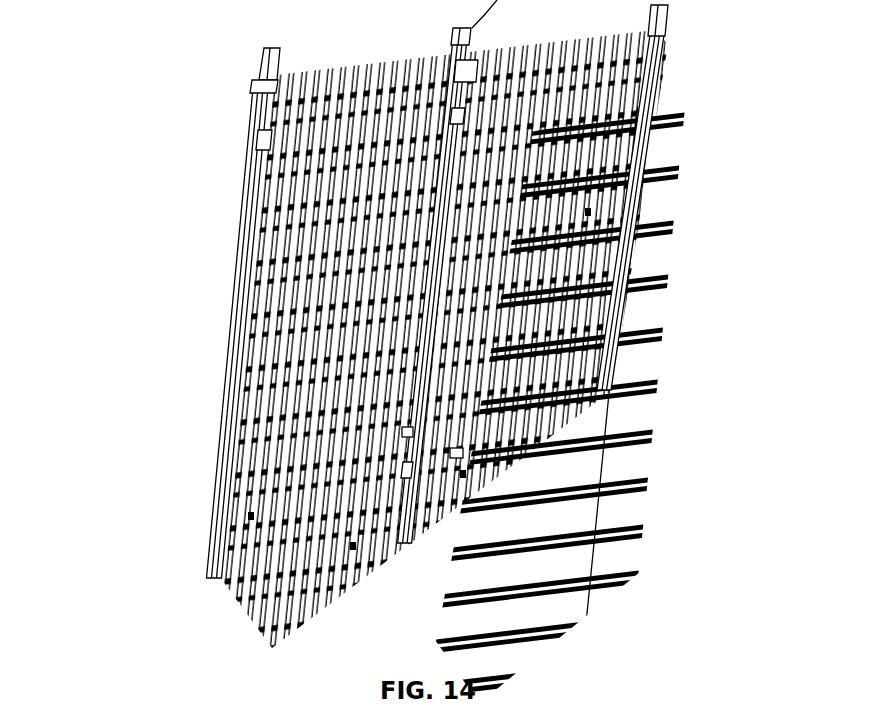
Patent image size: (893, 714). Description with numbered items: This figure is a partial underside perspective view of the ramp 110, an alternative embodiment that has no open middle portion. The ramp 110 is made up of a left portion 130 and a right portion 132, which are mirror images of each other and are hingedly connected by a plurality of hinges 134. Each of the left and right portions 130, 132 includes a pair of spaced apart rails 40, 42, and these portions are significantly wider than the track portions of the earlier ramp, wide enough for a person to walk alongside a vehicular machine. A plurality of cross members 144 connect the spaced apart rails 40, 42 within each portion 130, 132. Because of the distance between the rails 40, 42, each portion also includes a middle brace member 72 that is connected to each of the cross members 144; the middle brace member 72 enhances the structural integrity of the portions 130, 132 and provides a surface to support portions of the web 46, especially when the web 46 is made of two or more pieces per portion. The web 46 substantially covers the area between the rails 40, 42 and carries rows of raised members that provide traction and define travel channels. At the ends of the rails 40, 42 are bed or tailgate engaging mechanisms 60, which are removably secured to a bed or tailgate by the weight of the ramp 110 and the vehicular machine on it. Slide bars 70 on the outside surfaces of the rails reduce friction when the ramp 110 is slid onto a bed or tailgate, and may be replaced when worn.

The ramp 110 is at (152, 166).
The bed or tailgate engaging mechanism 60 is at (283, 62).
The right portion 132 is at (254, 119).
The slide bar 70 is at (262, 142).
The hinge 134 is at (465, 117).
The left portion 130 is at (660, 99).
The web 46 is at (592, 213).
The rail 40 is at (622, 253).
The cross member 144 is at (615, 288).
The rail 42 is at (452, 220).
The middle brace member 72 is at (505, 375).